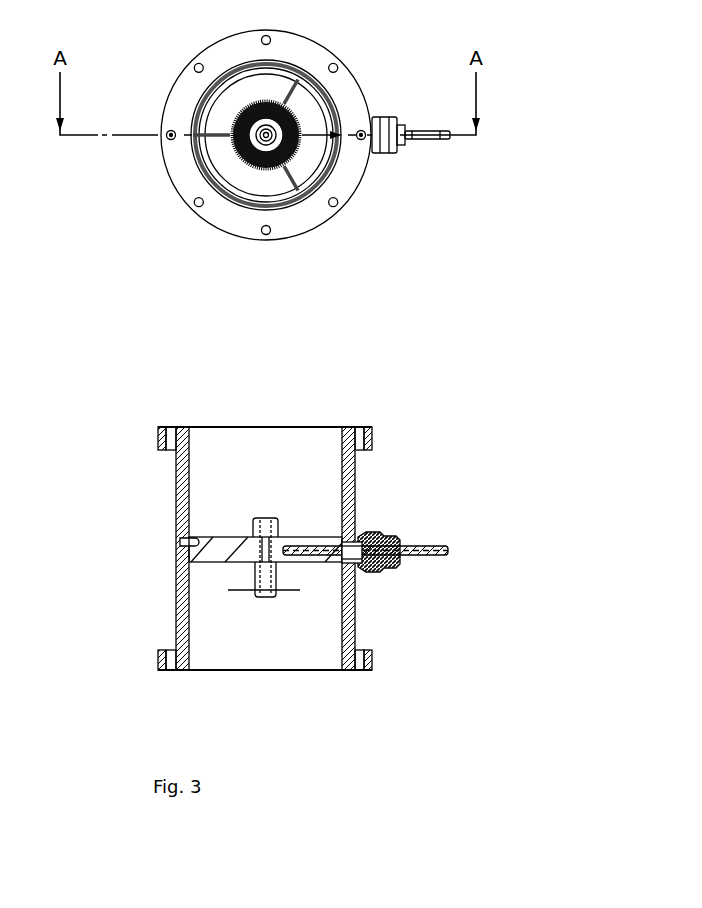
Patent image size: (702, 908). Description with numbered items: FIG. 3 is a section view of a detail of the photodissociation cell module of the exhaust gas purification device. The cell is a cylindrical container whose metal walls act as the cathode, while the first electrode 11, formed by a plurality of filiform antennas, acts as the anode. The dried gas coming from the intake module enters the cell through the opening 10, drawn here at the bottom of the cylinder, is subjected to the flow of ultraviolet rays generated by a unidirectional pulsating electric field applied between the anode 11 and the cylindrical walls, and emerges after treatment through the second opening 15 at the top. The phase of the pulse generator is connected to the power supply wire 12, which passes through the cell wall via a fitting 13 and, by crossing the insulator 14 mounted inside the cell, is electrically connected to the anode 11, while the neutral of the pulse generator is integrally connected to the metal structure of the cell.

The opening 10 is at (264, 636).
The first electrode 11 is at (243, 176).
The power supply wire 12 is at (428, 540).
The compression fitting 13 is at (378, 578).
The insulator 14 is at (215, 527).
The opening 15 is at (267, 452).